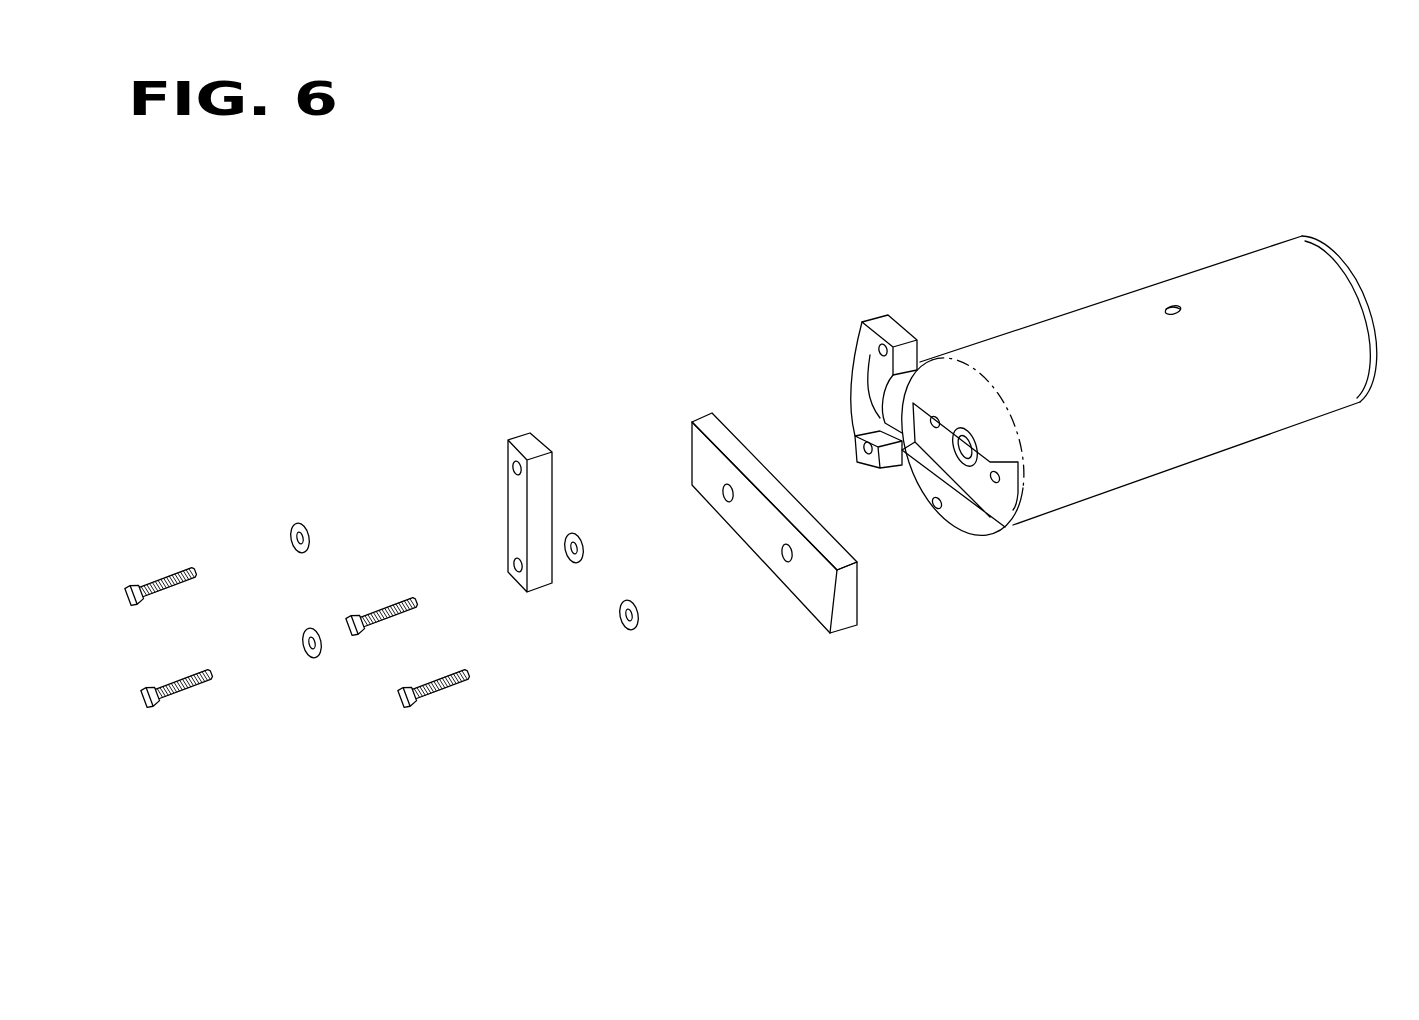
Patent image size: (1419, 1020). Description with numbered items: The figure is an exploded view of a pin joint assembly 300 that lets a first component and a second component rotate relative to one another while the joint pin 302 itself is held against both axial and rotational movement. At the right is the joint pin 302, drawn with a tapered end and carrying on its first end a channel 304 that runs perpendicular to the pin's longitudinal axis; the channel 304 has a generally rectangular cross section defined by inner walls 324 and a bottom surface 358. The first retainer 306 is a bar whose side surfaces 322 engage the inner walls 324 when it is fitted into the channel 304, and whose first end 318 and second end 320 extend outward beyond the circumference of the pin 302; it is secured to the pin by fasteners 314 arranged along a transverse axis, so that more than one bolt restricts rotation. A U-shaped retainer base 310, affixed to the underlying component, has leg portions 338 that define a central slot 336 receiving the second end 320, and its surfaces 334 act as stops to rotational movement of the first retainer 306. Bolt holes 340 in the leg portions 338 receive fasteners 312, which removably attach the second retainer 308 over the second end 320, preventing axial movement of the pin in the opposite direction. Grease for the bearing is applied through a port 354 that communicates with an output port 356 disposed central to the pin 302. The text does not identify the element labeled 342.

The pin joint assembly 300 is at (640, 306).
The joint pin 302 is at (1128, 417).
The channel 304 is at (1004, 478).
The first retainer 306 is at (754, 529).
The second retainer 308 is at (530, 442).
The retainer base 310 is at (904, 372).
The fasteners 312 is at (183, 572).
The fasteners 314 is at (390, 607).
The first end 318 is at (845, 623).
The second end 320 is at (692, 437).
The side surfaces 322 is at (818, 537).
The inner walls 324 is at (978, 516).
The surfaces 334 is at (868, 405).
The central slot 336 is at (905, 396).
The leg portions 338 is at (910, 335).
The bolt holes 340 is at (878, 348).
The cylinder body 342 is at (1038, 498).
The port 354 is at (942, 507).
The output port 356 is at (1183, 311).
The bottom surface 358 is at (1008, 477).